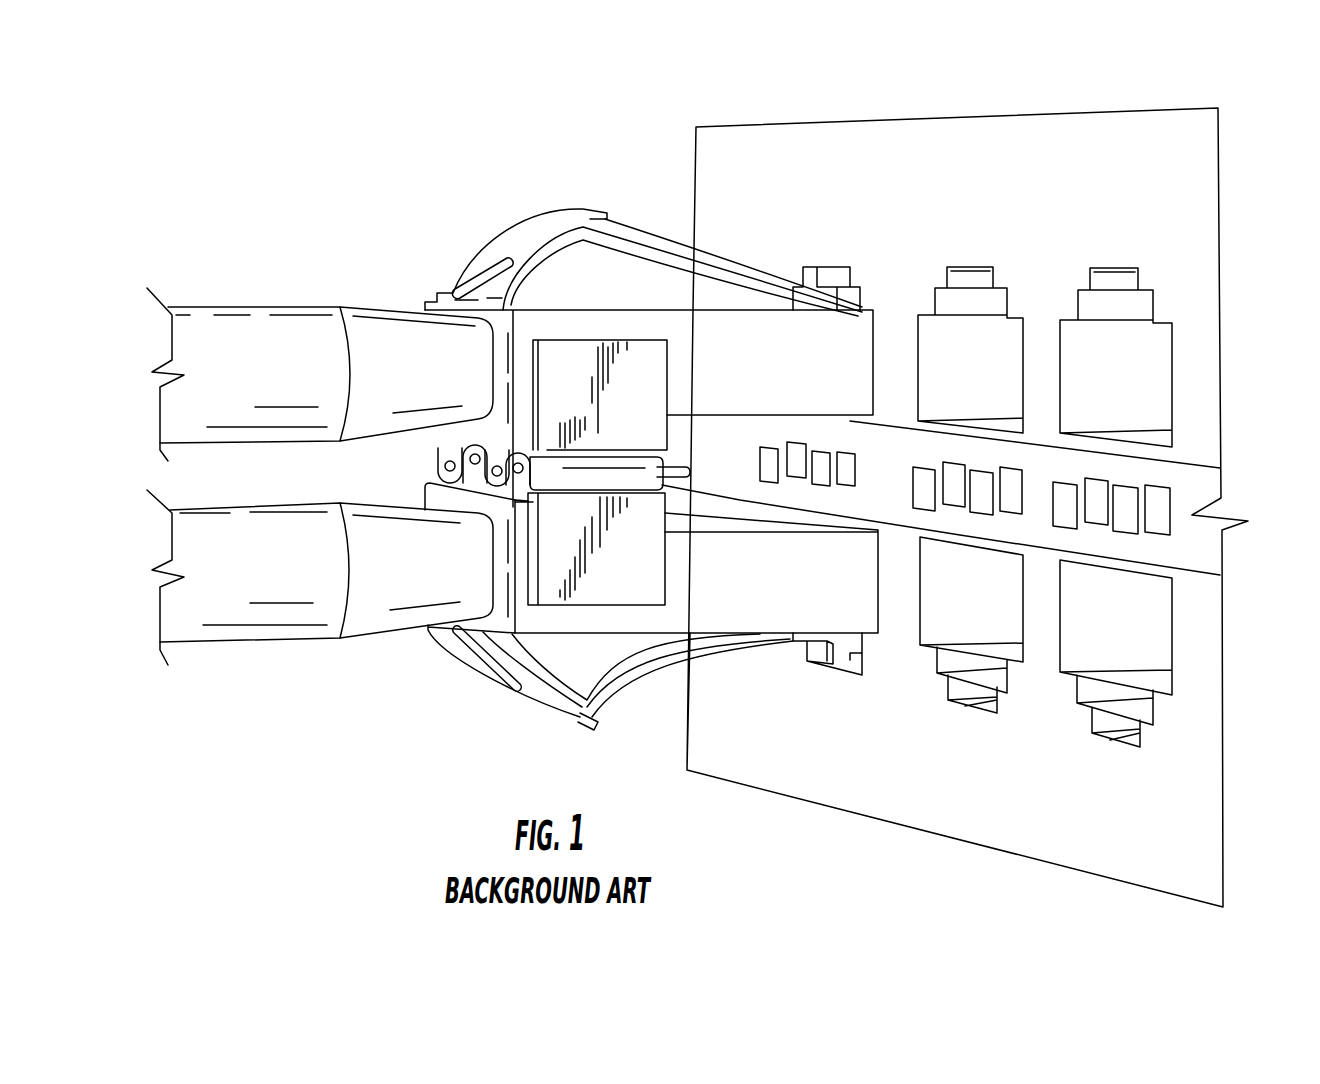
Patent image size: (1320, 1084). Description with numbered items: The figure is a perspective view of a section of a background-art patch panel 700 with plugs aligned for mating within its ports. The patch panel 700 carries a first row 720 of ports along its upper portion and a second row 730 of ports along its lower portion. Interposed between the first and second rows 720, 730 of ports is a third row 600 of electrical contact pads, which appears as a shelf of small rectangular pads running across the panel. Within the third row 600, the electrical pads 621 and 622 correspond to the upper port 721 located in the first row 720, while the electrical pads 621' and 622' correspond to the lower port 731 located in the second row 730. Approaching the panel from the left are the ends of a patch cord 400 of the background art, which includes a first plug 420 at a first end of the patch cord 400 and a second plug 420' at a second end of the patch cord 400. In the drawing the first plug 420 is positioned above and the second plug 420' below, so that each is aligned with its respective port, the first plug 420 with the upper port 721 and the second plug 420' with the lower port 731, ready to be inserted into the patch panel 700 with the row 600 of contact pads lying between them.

The patch cord 400 is at (260, 318).
The first plug 420 is at (643, 346).
The second plug 420' is at (609, 598).
The third row of electrical contact pads 600 is at (1198, 481).
The electrical pad 621 is at (737, 461).
The electrical pad 621' is at (763, 415).
The electrical pad 622 is at (793, 516).
The electrical pad 622' is at (831, 419).
The patch panel 700 is at (1058, 135).
The first row of ports 720 is at (1198, 334).
The upper port 721 is at (837, 292).
The second row of ports 730 is at (1200, 662).
The lower port 731 is at (828, 667).